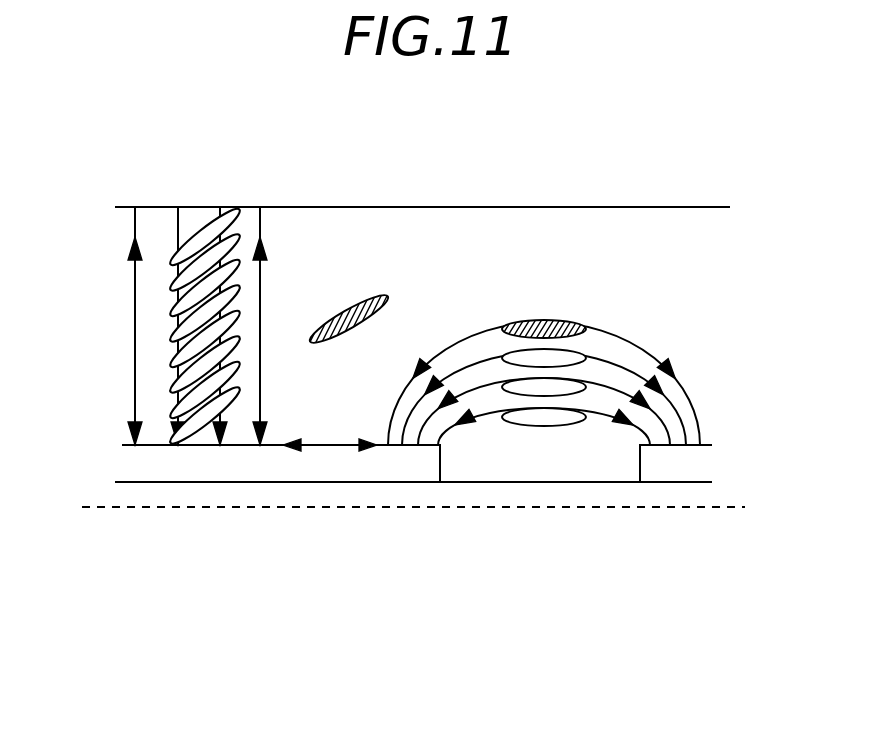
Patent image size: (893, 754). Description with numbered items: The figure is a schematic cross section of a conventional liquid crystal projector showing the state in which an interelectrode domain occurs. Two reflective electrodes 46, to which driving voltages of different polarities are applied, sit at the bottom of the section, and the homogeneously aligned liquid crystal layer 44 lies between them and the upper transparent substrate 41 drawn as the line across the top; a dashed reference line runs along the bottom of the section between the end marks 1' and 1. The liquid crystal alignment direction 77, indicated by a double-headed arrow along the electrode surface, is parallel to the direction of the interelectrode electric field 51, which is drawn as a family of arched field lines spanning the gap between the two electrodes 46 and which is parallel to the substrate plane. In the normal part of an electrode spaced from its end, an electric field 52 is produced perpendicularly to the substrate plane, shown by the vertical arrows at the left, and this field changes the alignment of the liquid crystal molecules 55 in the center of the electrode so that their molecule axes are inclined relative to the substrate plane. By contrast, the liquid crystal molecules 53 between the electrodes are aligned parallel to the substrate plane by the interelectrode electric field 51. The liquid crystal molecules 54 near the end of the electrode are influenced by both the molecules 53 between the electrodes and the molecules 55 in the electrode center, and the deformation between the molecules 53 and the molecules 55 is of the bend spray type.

The substrate reference line 1 is at (430, 508).
The substrate reference line end 1' is at (67, 509).
The upper transparent substrate 41 is at (422, 193).
The liquid crystal layer 44 is at (702, 269).
The reflective electrodes 46 is at (413, 463).
The interelectrode electric field 51 is at (544, 382).
The electric field 52 is at (183, 326).
The liquid crystal molecules between electrodes 53 is at (547, 318).
The liquid crystal molecules near the end of the electrode 54 is at (357, 305).
The liquid crystal molecules in the center of the electrode 55 is at (178, 333).
The liquid crystal alignment direction 77 is at (330, 459).